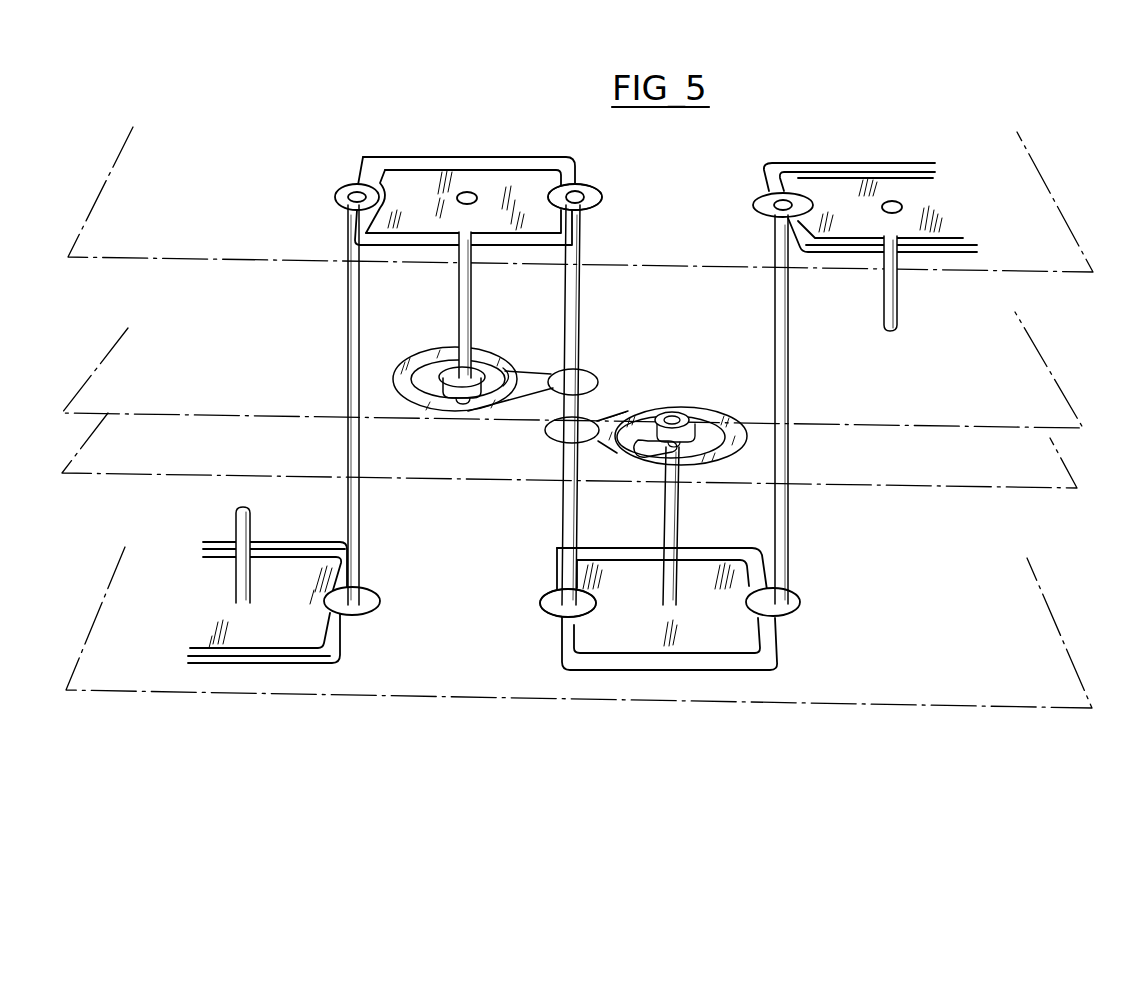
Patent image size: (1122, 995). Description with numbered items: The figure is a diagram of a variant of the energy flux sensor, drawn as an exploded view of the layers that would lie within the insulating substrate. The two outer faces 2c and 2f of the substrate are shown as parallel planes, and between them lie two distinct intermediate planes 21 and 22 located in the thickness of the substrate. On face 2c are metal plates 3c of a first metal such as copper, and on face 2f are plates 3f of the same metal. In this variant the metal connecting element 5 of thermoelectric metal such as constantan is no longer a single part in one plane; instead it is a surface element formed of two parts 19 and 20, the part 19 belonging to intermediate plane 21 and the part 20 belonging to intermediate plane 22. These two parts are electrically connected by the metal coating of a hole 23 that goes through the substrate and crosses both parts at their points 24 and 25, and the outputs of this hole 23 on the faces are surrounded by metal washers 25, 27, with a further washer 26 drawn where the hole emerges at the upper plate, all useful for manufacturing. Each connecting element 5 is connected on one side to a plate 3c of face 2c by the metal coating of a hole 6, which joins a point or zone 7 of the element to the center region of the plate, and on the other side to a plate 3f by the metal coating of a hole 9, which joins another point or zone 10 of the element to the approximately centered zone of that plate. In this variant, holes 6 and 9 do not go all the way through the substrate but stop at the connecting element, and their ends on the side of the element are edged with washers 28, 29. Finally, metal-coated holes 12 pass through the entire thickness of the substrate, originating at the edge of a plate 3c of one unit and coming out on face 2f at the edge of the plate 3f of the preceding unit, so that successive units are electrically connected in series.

The face 2c is at (1043, 220).
The face 2f is at (1040, 647).
The intermediate plane 21 is at (122, 370).
The intermediate plane 22 is at (102, 455).
The plate 3c is at (477, 166).
The plate 3f is at (700, 648).
The metal-coated hole 12 is at (350, 378).
The hole 23 is at (580, 292).
The bearing ring 26 is at (600, 197).
The hole 6 is at (471, 300).
The point or zone 7 is at (447, 372).
The washer 28 is at (446, 398).
The part 19 is at (466, 405).
The point 24 is at (556, 371).
The point 25 is at (560, 440).
The metal connecting element 5 is at (600, 374).
The part 20 is at (645, 459).
The point or zone 10 is at (700, 432).
The washer 29 is at (685, 418).
The hole 9 is at (680, 515).
The metal washer 27 is at (556, 613).